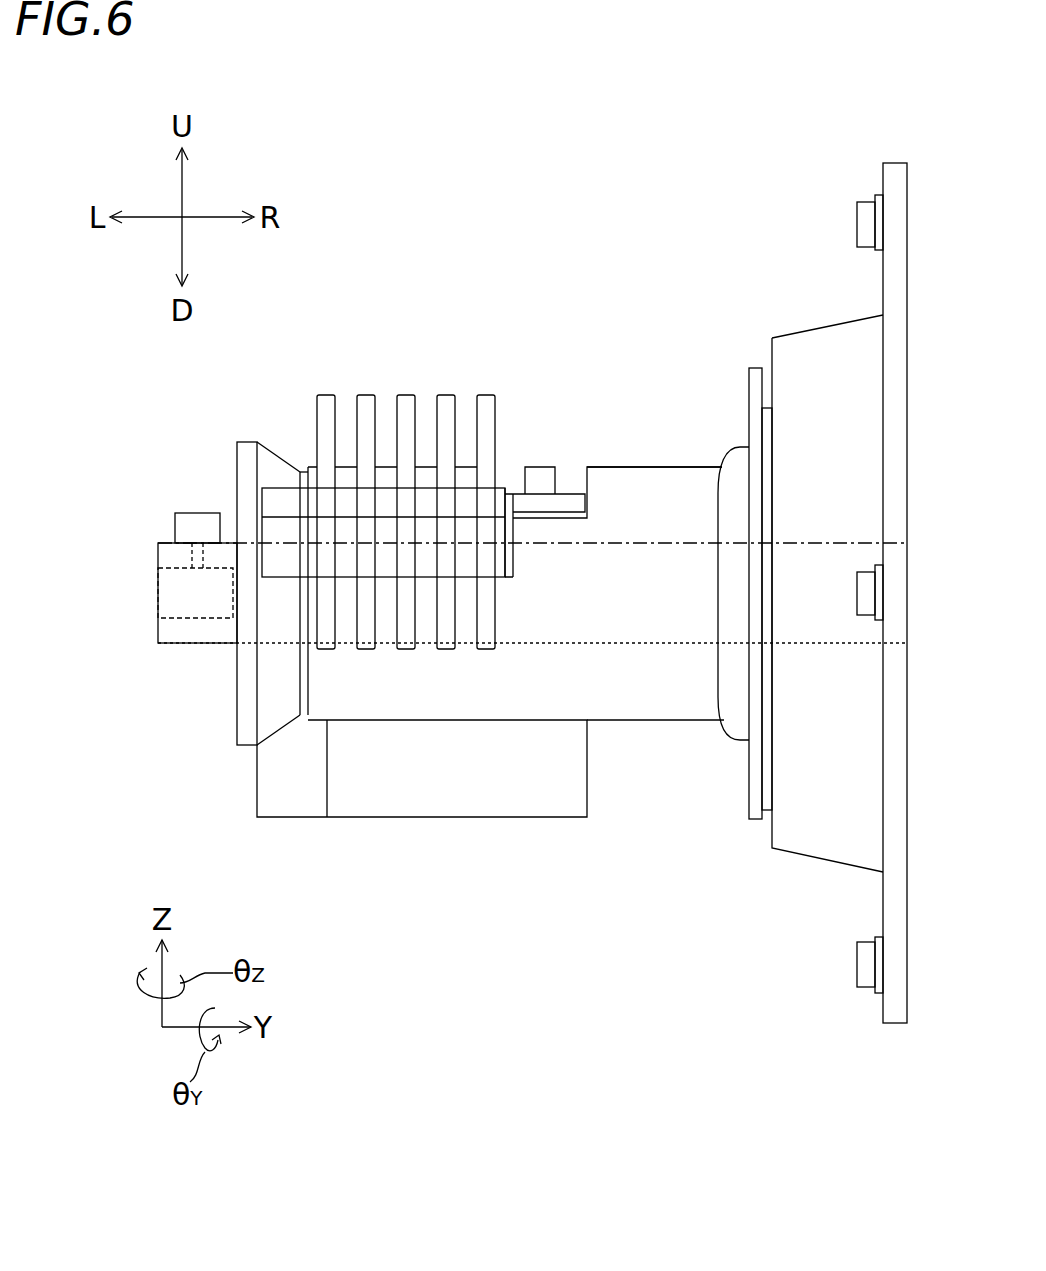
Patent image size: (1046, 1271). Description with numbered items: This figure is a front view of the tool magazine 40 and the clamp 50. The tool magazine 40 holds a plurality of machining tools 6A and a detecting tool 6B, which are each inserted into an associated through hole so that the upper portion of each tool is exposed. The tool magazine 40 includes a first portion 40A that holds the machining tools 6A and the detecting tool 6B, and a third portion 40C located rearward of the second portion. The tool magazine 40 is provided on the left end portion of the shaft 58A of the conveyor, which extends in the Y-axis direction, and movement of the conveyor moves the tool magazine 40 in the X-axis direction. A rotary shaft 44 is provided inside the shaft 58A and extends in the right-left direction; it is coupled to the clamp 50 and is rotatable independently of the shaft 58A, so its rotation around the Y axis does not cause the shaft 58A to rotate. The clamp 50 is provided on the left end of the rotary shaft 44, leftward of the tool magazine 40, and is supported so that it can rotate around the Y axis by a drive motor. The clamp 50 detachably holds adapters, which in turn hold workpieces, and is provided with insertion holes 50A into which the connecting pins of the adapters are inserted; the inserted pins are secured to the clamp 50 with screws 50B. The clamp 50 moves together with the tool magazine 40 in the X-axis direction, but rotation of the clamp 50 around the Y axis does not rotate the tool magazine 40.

The machining tool 6A is at (447, 395).
The detecting tool 6B is at (485, 395).
The tool magazine 40 is at (514, 579).
The first portion 40A is at (450, 557).
The third portion 40C is at (387, 817).
The rotary shaft 44 is at (665, 650).
The clamp 50 is at (205, 645).
The insertion hole 50A is at (175, 618).
The screw 50B is at (188, 513).
The shaft 58A is at (683, 563).